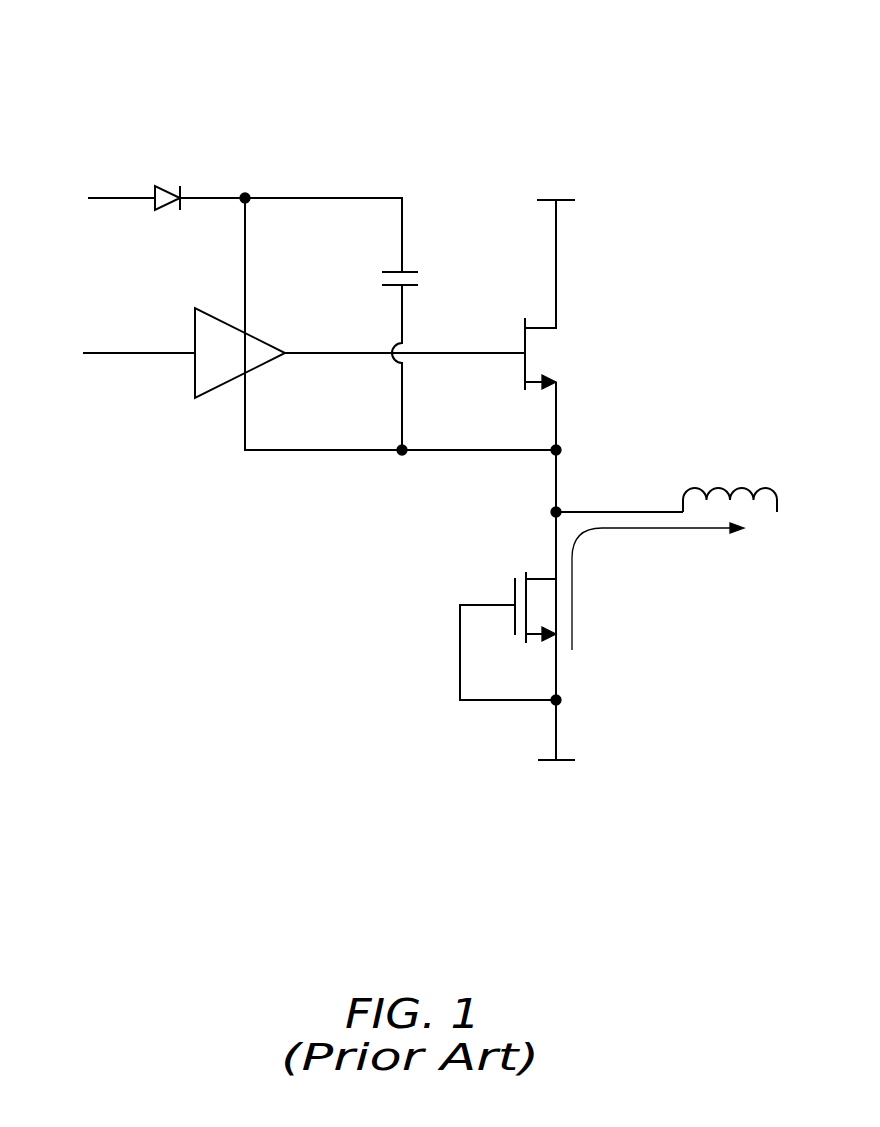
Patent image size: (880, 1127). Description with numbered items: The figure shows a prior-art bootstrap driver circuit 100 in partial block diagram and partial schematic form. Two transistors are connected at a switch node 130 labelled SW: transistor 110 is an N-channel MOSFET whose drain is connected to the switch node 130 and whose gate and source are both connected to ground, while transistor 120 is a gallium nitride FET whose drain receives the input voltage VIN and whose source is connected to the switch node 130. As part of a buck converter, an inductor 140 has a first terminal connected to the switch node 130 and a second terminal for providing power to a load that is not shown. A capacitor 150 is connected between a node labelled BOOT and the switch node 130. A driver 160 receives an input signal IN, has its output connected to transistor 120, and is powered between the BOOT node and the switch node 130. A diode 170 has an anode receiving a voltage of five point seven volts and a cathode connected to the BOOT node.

The bootstrap driver circuit 100 is at (623, 66).
The transistor 110 is at (512, 594).
The transistor 120 is at (525, 336).
The switch node 130 is at (562, 508).
The inductor 140 is at (740, 488).
The capacitor 150 is at (418, 278).
The driver 160 is at (195, 376).
The diode 170 is at (166, 186).